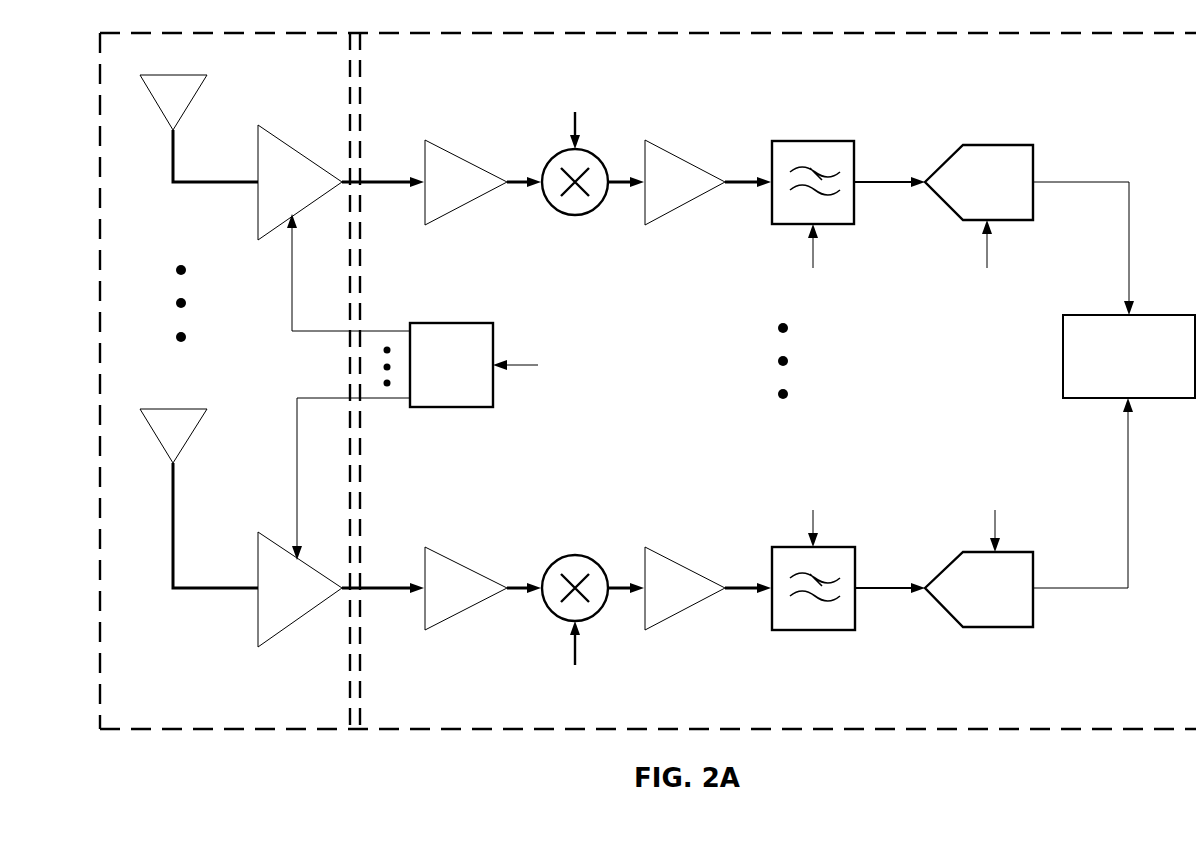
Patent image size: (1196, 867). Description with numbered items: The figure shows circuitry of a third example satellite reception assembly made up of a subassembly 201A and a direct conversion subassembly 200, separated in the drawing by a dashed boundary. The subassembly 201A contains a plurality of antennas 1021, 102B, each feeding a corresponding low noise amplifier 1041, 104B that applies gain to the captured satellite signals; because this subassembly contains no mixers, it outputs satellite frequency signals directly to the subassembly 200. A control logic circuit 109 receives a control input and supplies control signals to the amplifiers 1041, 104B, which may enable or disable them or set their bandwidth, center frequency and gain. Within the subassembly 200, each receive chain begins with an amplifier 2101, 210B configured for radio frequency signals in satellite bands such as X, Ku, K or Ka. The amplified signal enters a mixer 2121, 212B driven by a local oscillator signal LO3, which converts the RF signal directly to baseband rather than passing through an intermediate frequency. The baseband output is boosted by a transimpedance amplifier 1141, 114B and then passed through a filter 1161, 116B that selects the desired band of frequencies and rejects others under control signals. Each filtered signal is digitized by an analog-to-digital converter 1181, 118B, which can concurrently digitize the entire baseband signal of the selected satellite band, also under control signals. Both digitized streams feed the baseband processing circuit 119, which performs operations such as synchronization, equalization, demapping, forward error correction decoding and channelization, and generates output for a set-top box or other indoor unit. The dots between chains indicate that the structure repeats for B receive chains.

The direct conversion subassembly 200 is at (790, 24).
The subassembly 201A is at (262, 25).
The antenna 1021 is at (178, 75).
The antenna 102B is at (178, 408).
The amplifier 1041 is at (304, 147).
The amplifier 104B is at (315, 557).
The control logic circuit 109 is at (485, 314).
The amplifier 2101 is at (472, 154).
The amplifier 210B is at (471, 559).
The mixer 2121 is at (612, 149).
The mixer 212B is at (613, 557).
The amplifier 1141 is at (692, 150).
The amplifier 114B is at (691, 560).
The filter 1161 is at (836, 130).
The filter 116B is at (834, 537).
The analog-to-digital converter 1181 is at (1006, 135).
The analog-to-digital converter 118B is at (1023, 544).
The baseband processing circuit 119 is at (1170, 305).